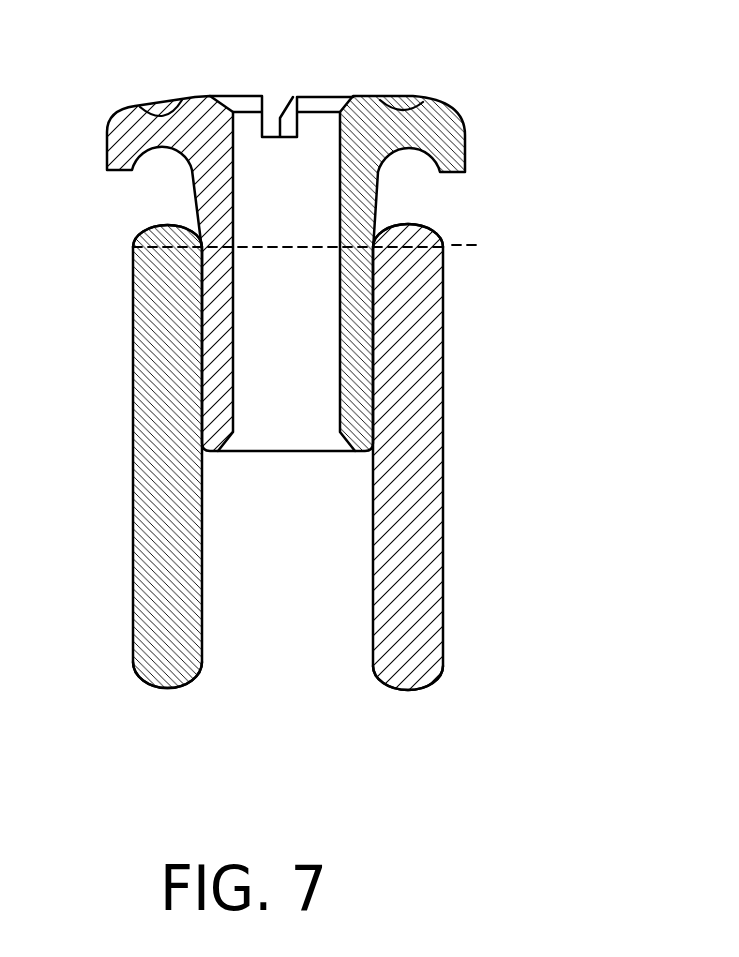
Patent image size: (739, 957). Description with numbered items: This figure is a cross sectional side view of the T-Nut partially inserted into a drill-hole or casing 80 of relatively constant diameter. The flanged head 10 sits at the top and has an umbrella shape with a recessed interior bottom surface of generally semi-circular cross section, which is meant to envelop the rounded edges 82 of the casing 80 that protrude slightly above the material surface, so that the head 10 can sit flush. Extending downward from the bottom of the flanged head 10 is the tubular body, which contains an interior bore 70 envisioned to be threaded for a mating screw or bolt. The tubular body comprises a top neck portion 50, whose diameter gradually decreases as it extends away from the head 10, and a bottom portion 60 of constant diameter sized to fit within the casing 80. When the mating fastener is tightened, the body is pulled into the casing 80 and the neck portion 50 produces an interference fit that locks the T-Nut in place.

The flanged head 10 is at (360, 96).
The neck portion 50 is at (453, 172).
The bottom portion 60 is at (117, 245).
The bore 70 is at (277, 473).
The casing 80 is at (173, 547).
The rounded edges 82 is at (153, 233).